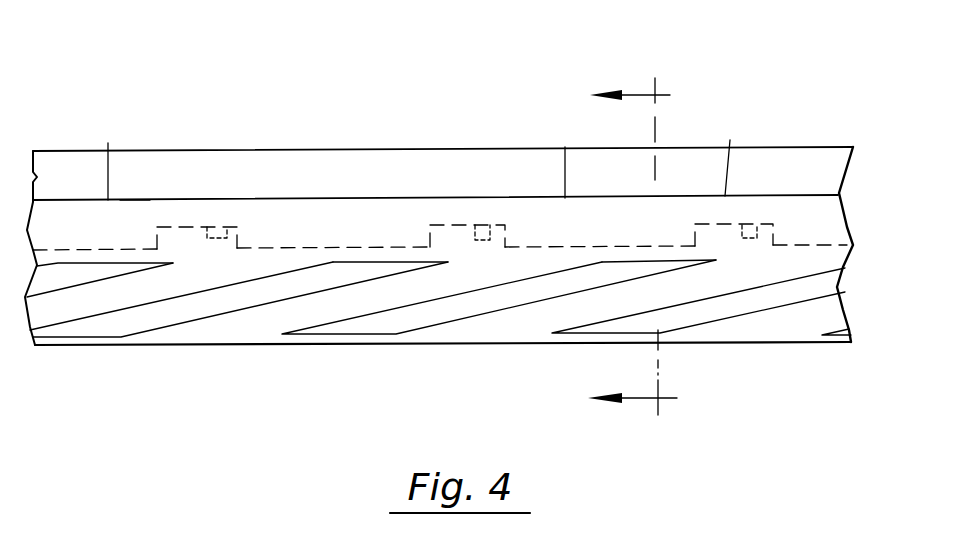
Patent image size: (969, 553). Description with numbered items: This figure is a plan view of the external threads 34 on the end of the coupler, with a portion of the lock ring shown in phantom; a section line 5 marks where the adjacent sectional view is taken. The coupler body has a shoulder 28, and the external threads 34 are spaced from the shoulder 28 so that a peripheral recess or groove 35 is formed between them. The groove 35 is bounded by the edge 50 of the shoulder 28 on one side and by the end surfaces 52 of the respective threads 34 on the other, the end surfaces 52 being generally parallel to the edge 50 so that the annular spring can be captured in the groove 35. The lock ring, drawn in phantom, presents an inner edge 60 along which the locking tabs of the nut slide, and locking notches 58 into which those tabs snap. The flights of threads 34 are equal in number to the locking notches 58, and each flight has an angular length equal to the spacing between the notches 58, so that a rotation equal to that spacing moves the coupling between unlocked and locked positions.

The shoulder 28 is at (342, 164).
The external threads 34 is at (73, 277).
The peripheral recess or groove 35 is at (150, 210).
The edge of shoulder 50 is at (419, 155).
The end surfaces of threads 52 is at (110, 263).
The locking notches 58 is at (228, 226).
The inner edge of lock ring 60 is at (426, 241).
The section line 5- 5 is at (632, 252).